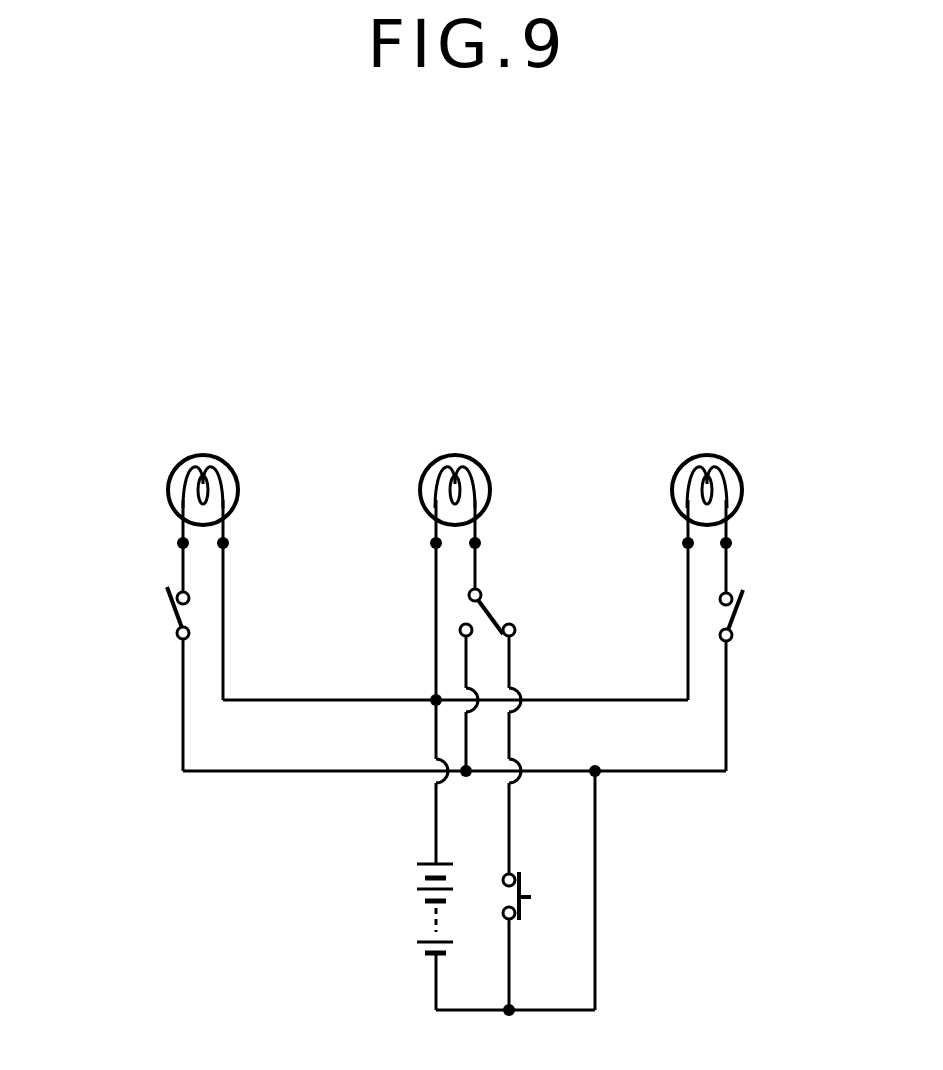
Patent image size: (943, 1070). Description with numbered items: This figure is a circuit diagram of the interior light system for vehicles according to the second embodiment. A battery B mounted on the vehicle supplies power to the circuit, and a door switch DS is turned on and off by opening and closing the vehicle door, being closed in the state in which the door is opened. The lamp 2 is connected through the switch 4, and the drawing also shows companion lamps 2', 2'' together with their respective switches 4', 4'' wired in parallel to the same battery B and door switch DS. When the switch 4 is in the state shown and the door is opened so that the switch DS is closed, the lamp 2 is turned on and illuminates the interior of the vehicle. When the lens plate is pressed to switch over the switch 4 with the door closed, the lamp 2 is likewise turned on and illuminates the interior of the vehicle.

The lamp 2' is at (203, 427).
The lamp 2 is at (455, 427).
The lamp 2'' is at (707, 426).
The switch 4' is at (115, 631).
The switch 4 is at (521, 582).
The switch 4'' is at (785, 619).
The battery B is at (410, 883).
The door switch DS is at (523, 907).